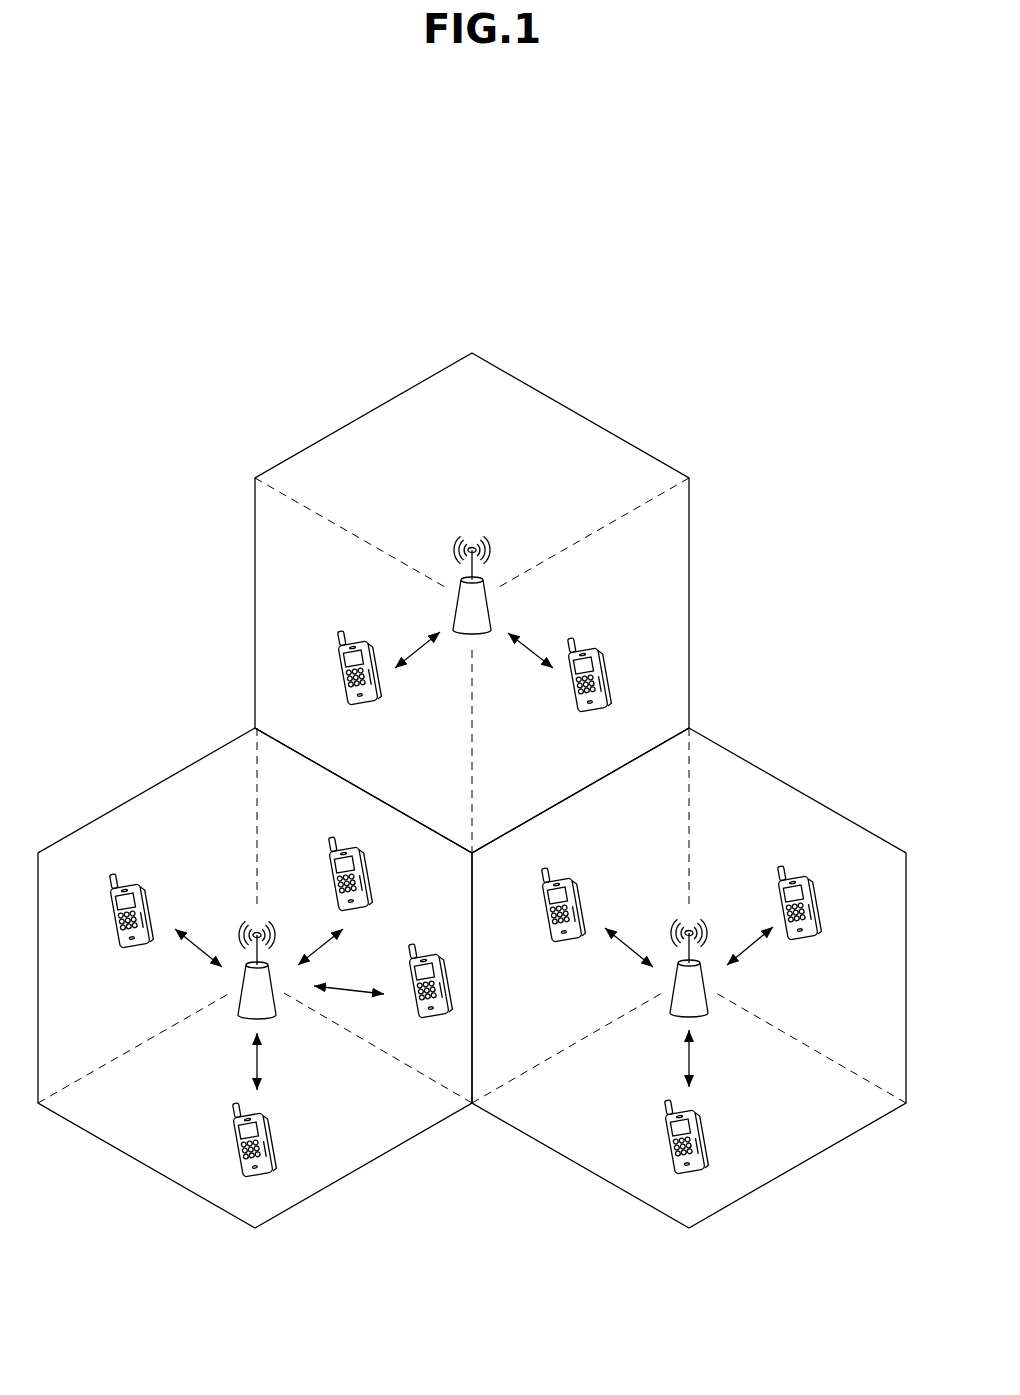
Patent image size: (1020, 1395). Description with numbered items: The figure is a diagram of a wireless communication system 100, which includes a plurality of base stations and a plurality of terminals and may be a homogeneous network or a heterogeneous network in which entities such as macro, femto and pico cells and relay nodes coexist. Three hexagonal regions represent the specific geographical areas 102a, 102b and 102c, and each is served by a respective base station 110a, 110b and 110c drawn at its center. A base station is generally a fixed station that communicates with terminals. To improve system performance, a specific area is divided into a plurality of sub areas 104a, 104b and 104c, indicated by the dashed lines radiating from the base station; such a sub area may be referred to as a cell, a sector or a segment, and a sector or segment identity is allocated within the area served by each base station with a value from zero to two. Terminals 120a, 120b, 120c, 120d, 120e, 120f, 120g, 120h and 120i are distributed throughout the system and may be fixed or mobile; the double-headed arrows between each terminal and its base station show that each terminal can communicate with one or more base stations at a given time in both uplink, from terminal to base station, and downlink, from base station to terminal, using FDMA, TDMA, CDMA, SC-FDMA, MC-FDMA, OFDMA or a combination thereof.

The wireless communication system 100 is at (763, 405).
The specific geographical area 102a is at (582, 414).
The specific geographical area 102b is at (152, 787).
The specific geographical area 102c is at (811, 795).
The sub area 104a is at (490, 432).
The sub area 104b is at (451, 775).
The sub area 104c is at (517, 775).
The base station 110a is at (472, 542).
The base station 110b is at (282, 1010).
The base station 110c is at (708, 1010).
The terminal 120a is at (338, 668).
The terminal 120b is at (607, 680).
The terminal 120c is at (136, 890).
The terminal 120d is at (336, 850).
The terminal 120e is at (431, 957).
The terminal 120f is at (236, 1139).
The terminal 120g is at (563, 884).
The terminal 120h is at (667, 1133).
The terminal 120i is at (813, 945).